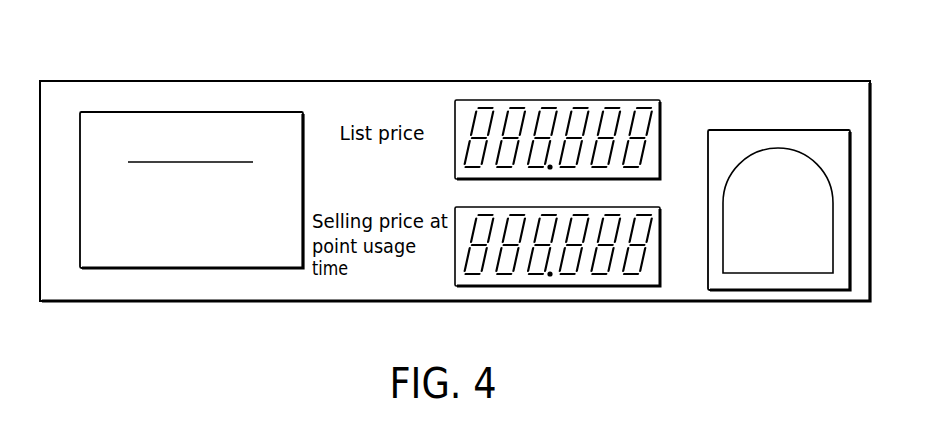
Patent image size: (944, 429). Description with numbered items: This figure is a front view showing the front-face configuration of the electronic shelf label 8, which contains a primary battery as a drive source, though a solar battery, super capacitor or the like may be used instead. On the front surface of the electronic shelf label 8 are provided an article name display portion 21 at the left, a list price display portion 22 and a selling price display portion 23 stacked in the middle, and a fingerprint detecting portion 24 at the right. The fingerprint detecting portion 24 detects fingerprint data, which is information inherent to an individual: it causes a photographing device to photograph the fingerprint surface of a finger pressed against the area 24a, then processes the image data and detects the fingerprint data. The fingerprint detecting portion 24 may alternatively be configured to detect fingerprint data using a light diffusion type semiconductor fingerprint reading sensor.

The electronic shelf label 8 is at (419, 81).
The article name display portion 21 is at (203, 112).
The list price display portion 22 is at (557, 100).
The selling price display portion 23 is at (556, 288).
The fingerprint detecting portion 24 is at (788, 130).
The area 24a is at (820, 163).